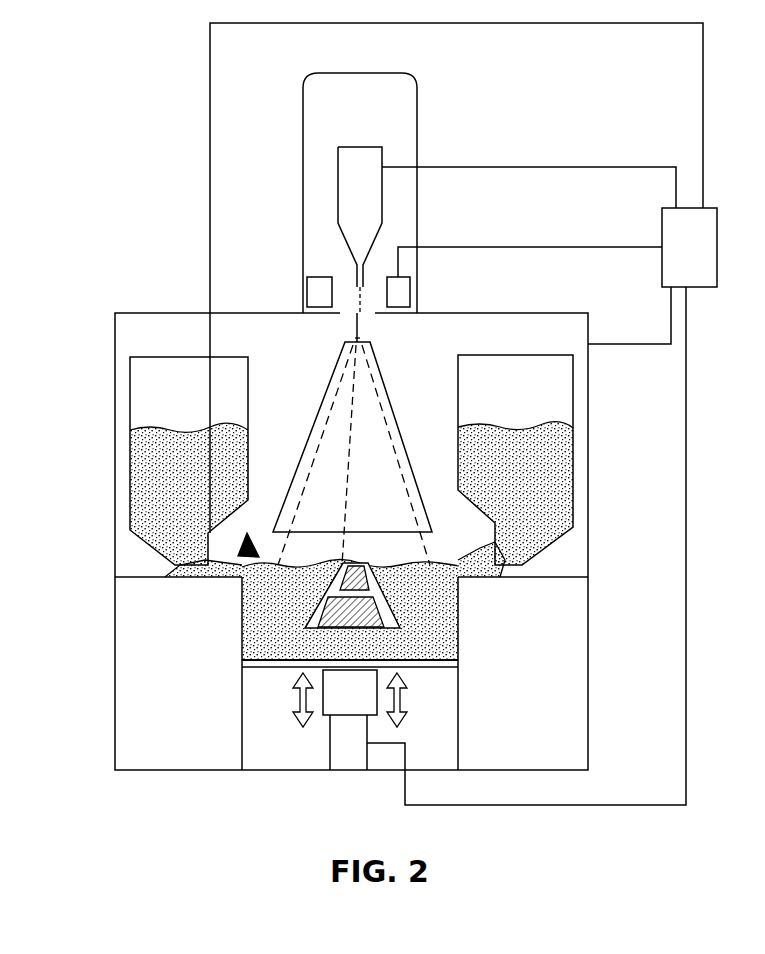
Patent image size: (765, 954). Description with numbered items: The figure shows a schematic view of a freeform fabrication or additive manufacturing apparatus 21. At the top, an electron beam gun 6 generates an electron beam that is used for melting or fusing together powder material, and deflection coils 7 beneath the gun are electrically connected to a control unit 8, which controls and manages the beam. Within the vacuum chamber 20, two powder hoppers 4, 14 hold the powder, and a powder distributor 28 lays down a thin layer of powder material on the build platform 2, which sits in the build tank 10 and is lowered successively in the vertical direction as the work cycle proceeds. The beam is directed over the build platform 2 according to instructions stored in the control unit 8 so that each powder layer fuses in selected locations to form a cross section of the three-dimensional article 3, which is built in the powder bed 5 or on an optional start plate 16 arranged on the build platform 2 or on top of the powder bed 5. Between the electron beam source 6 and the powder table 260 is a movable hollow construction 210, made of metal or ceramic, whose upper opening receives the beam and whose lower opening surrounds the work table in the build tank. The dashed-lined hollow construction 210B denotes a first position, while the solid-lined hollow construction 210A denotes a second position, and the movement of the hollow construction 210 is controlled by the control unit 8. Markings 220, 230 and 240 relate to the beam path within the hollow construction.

The build platform 2 is at (272, 673).
The three-dimensional article 3 is at (240, 610).
The powder hopper 4 is at (243, 547).
The powder bed 5 is at (460, 593).
The electron beam gun 6 is at (347, 200).
The deflection coils 7 is at (312, 293).
The control unit 8 is at (549, 255).
The build tank 10 is at (238, 713).
The powder hopper 14 is at (537, 472).
The start plate 16 is at (460, 623).
The vacuum chamber 20 is at (588, 722).
The additive manufacturing apparatus 21 is at (565, 116).
The powder distributor 28 is at (240, 580).
The movable hollow construction 210 is at (320, 362).
The hollow construction in second position 210A is at (392, 388).
The hollow construction in first position 210B is at (315, 435).
The beam entry point 220 is at (362, 335).
The beam axis 230 is at (355, 442).
The beam spot 240 is at (360, 543).
The powder table 260 is at (143, 582).